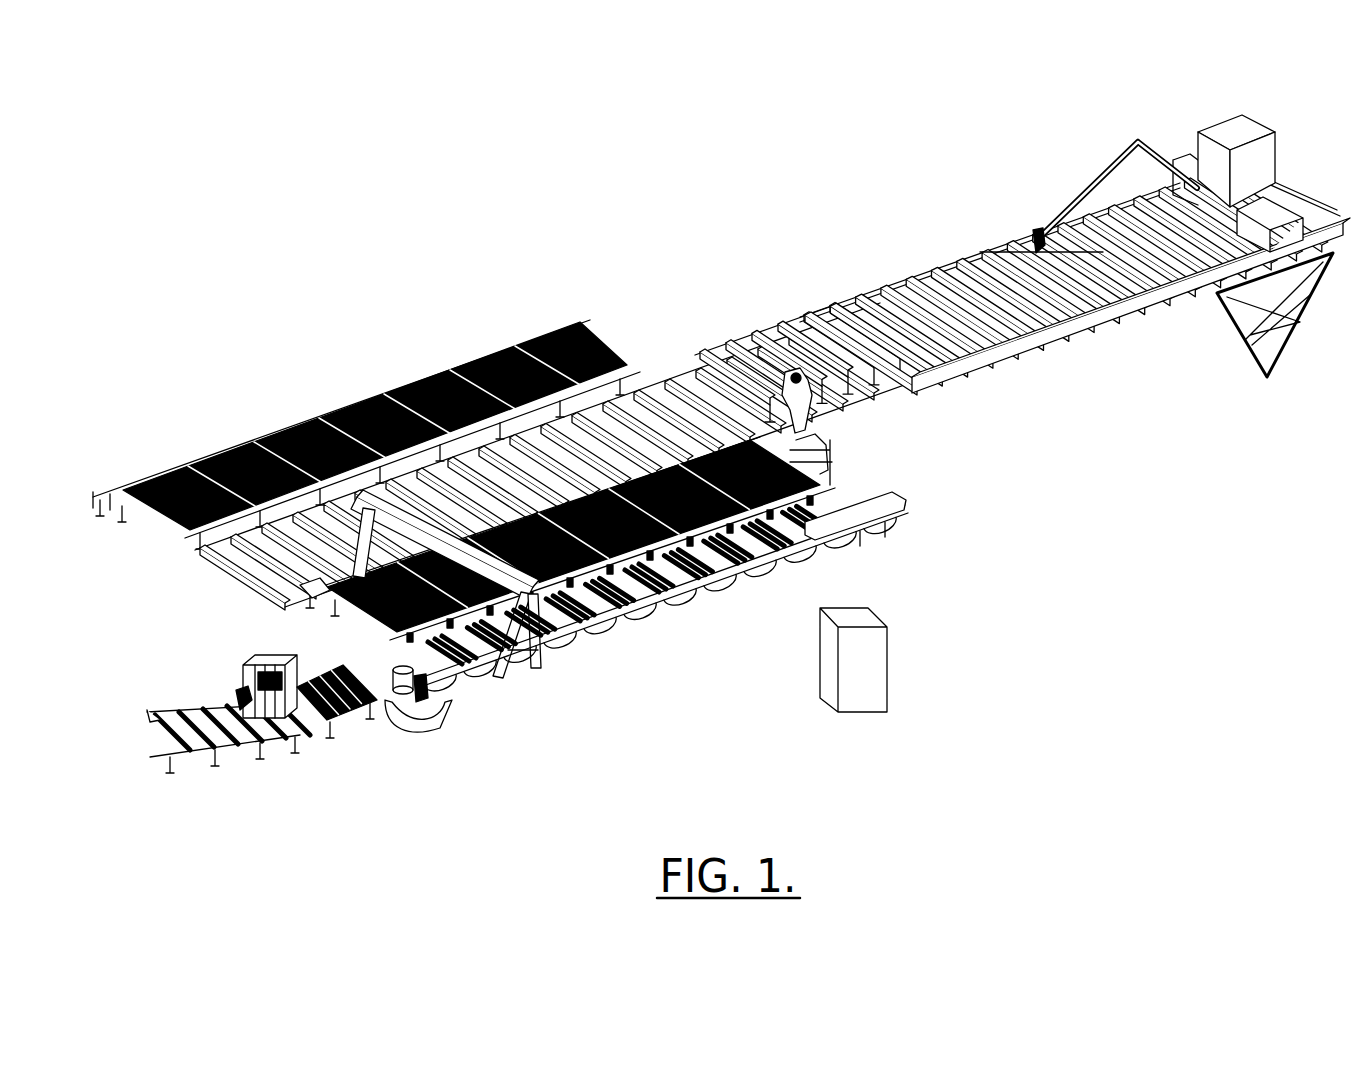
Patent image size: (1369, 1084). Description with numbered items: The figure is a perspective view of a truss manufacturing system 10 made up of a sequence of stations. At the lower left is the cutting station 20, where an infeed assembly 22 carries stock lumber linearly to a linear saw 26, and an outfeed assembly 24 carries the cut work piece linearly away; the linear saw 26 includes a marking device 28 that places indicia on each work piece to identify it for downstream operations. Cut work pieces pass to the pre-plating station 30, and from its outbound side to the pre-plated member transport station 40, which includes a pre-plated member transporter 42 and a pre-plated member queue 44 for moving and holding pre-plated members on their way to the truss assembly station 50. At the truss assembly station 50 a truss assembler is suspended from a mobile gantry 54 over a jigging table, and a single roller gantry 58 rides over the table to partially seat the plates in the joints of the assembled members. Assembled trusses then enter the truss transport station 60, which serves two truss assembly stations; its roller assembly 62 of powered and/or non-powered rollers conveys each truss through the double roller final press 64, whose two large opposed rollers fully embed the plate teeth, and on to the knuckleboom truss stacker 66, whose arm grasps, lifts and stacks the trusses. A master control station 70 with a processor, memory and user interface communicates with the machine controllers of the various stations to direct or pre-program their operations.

The system 10 is at (985, 587).
The cutting station 20 is at (187, 653).
The infeed assembly 22 is at (195, 717).
The outfeed assembly 24 is at (345, 663).
The linear saw 26 is at (260, 652).
The marking device 28 is at (240, 700).
The pre-plating station 30 is at (433, 747).
The pre-plated member transport station 40 is at (562, 647).
The pre-plated member transporter 42 is at (597, 627).
The pre-plated member queue 44 is at (802, 520).
The truss assembly station 50 is at (390, 383).
The mobile gantry 54 is at (508, 680).
The single roller gantry 58 is at (800, 447).
The truss transport station 60 is at (787, 305).
The roller assembly 62 is at (267, 548).
The double roller final press 64 is at (695, 350).
The knuckleboom truss stacker 66 is at (1117, 143).
The master control station 70 is at (865, 695).